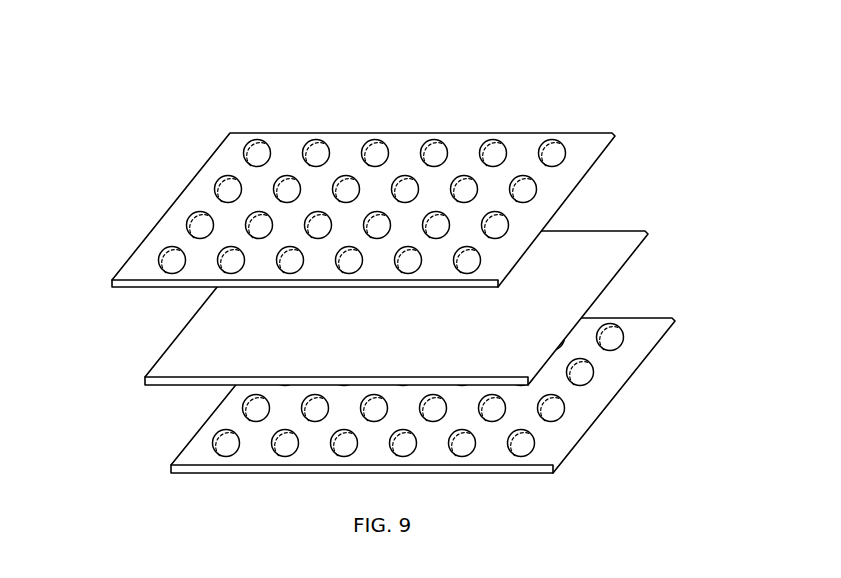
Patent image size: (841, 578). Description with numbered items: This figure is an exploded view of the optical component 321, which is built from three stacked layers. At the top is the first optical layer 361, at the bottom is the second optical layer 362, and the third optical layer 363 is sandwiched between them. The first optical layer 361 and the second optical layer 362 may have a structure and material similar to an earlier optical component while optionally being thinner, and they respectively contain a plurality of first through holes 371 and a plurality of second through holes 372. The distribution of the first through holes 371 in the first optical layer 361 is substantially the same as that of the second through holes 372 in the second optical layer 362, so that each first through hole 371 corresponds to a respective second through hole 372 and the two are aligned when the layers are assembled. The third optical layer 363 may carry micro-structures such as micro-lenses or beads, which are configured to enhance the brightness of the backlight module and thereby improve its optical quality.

The optical component 321 is at (385, 267).
The first optical layer 361 is at (366, 183).
The second optical layer 362 is at (411, 364).
The third optical layer 363 is at (612, 247).
The first through holes 371 is at (175, 267).
The second through holes 372 is at (227, 450).